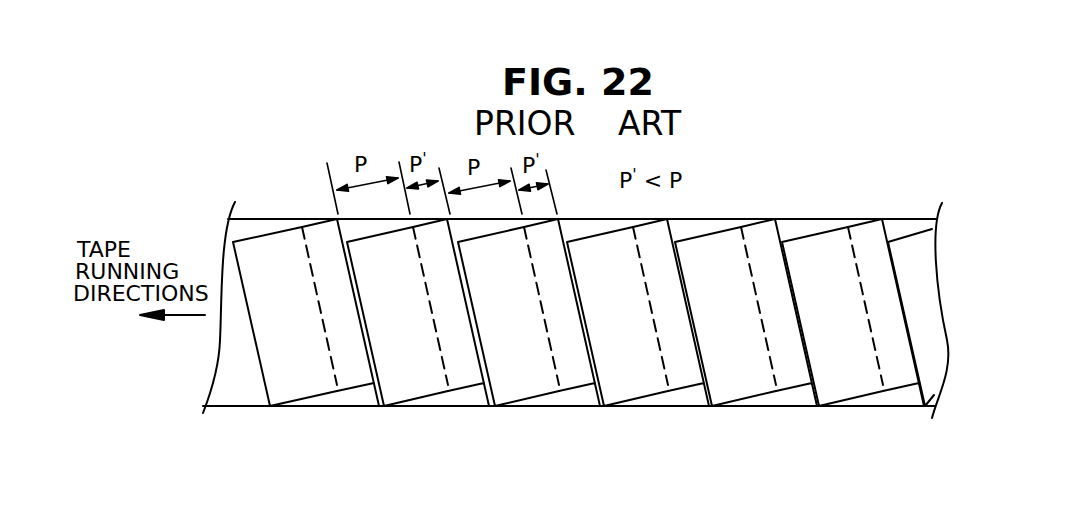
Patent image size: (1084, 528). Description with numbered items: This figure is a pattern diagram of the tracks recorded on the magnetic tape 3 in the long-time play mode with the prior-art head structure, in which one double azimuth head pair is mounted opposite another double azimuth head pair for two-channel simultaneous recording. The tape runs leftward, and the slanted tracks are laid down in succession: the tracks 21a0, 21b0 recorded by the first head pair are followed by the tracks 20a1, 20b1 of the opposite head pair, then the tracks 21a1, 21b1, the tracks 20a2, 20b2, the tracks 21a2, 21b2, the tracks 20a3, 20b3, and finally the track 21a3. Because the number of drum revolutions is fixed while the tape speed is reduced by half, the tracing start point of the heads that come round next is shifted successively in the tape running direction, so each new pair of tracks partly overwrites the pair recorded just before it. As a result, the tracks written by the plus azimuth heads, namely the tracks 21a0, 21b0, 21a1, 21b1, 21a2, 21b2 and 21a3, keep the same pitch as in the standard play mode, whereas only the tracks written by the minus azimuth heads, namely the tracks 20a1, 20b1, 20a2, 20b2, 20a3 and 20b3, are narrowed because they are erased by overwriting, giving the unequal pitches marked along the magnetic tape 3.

The magnetic tape 3 is at (862, 217).
The track of head 21a 21a0 is at (285, 316).
The track of head 21b 21b0 is at (340, 312).
The track of head 20a 20a1 is at (397, 316).
The track of head 20b 20b1 is at (451, 312).
The track of head 21a 21a1 is at (508, 316).
The track of head 21b 21b1 is at (562, 312).
The track of head 20a 20a2 is at (617, 316).
The track of head 20b 20b2 is at (671, 312).
The track of head 21a 21a2 is at (725, 316).
The track of head 21b 21b2 is at (779, 312).
The track of head 20a 20a3 is at (832, 316).
The track of head 20b 20b3 is at (886, 312).
The track of head 21a 21a3 is at (911, 317).